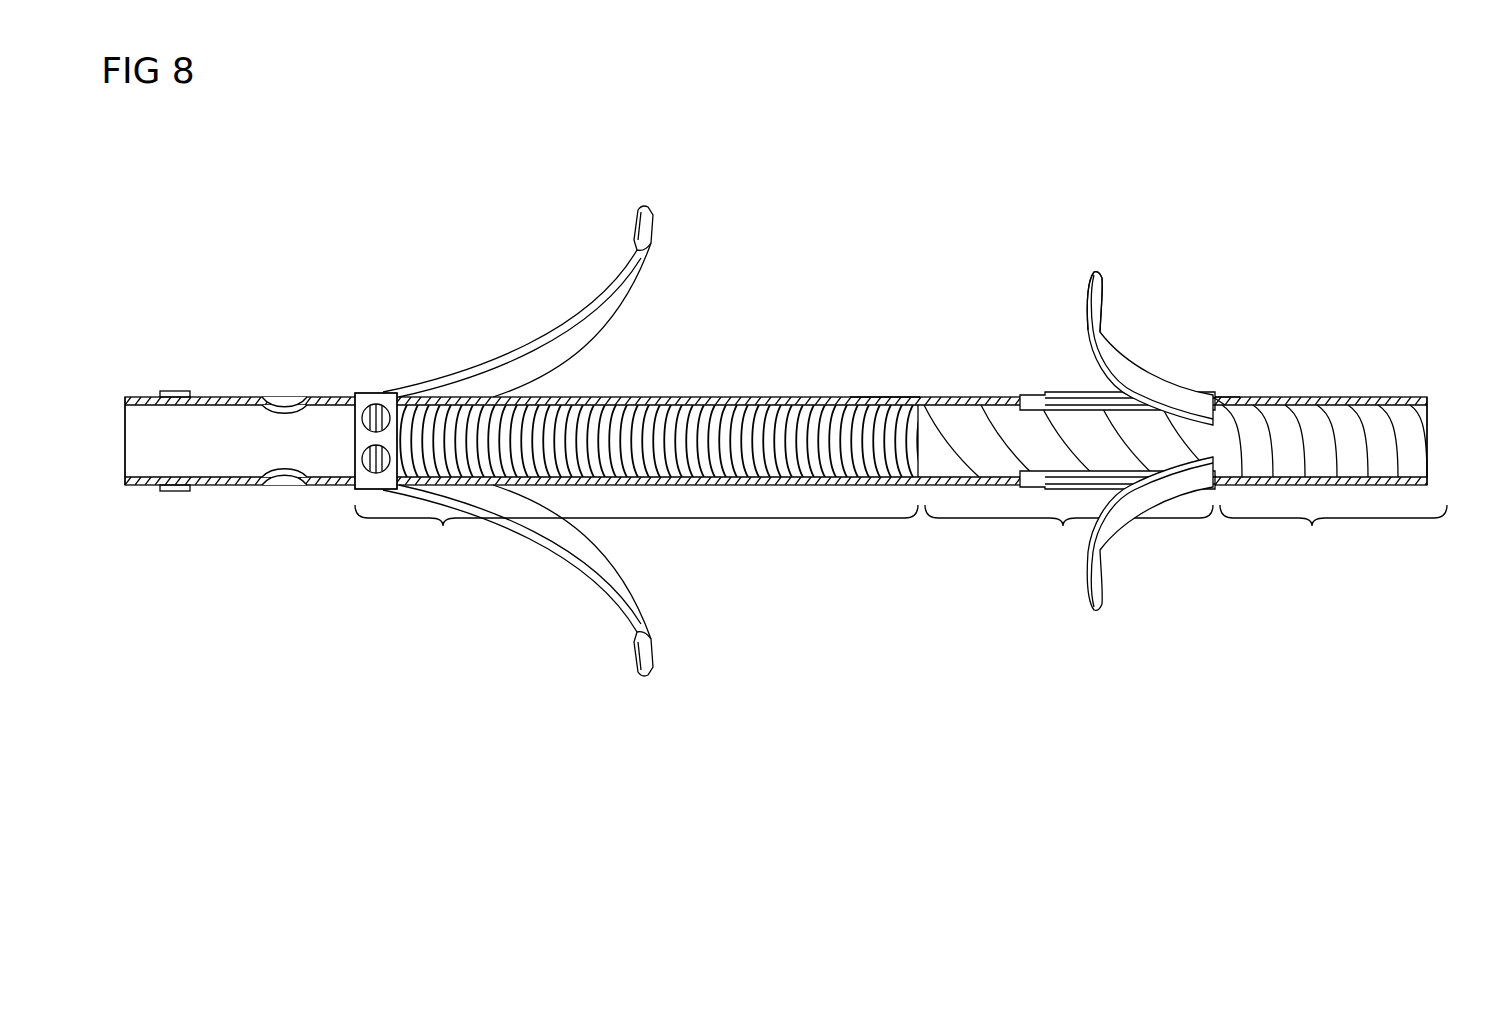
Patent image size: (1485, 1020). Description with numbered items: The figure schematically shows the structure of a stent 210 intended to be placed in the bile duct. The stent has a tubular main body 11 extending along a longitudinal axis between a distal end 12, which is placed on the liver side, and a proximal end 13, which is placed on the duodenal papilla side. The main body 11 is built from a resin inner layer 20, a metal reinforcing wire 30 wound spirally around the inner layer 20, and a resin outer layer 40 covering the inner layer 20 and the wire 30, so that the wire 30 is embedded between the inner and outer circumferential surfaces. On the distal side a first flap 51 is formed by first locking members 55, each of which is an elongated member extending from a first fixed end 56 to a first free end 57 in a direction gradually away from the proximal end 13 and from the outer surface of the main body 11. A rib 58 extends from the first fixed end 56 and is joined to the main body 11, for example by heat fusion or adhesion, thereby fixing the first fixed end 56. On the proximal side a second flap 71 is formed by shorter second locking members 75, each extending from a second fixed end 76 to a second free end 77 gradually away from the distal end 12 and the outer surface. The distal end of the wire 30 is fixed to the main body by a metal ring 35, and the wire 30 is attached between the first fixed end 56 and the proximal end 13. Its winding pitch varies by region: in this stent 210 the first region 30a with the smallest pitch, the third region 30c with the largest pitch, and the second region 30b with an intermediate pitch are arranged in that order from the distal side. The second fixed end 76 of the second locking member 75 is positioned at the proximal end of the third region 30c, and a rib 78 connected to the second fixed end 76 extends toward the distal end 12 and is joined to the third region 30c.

The main body 11 is at (853, 380).
The distal end 12 is at (122, 392).
The proximal end 13 is at (1432, 488).
The inner layer 20 is at (210, 452).
The wire 30 is at (1002, 432).
The first region 30a is at (443, 530).
The second region 30b is at (1312, 530).
The third region 30c is at (1062, 530).
The metal ring 35 is at (360, 443).
The outer layer 40 is at (775, 397).
The first flap 51 is at (600, 584).
The first locking member 55 is at (585, 317).
The first fixed end 56 is at (362, 393).
The first free end 57 is at (640, 206).
The rib 58 is at (235, 395).
The second flap 71 is at (1115, 590).
The second locking member 75 is at (1128, 365).
The second fixed end 76 is at (1222, 407).
The second free end 77 is at (1096, 272).
The rib 78 is at (1068, 393).
The stent 210 is at (1229, 348).